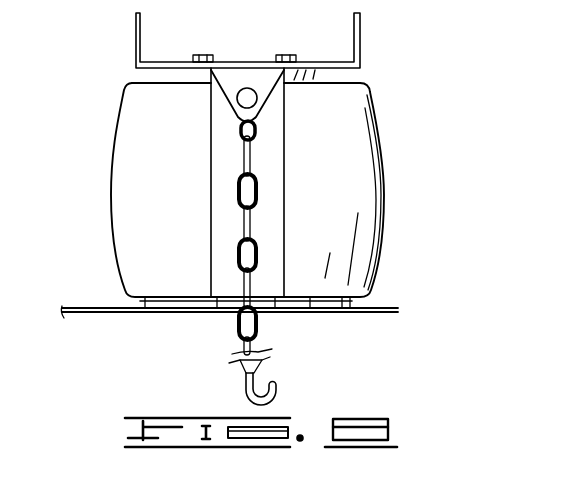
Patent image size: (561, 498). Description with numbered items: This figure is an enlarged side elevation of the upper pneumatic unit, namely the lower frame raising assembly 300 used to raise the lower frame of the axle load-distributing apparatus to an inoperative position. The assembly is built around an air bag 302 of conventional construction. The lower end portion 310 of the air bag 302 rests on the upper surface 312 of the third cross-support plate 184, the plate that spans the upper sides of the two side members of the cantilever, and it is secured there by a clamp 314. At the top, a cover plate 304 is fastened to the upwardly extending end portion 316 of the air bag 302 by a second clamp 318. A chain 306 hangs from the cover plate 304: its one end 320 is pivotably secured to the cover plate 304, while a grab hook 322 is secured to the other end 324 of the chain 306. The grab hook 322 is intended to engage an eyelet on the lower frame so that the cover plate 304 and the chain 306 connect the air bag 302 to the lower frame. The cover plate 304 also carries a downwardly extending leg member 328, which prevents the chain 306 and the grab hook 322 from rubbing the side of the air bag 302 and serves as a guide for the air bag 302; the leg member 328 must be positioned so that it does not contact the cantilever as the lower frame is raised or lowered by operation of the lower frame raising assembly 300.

The lower frame raising assembly 300 is at (96, 113).
The air bag 302 is at (367, 193).
The cover plate 304 is at (360, 45).
The chain 306 is at (260, 196).
The lower end portion 310 is at (358, 276).
The upper surface 312 is at (370, 307).
The clamp 314 is at (157, 302).
The upwardly extending end portion 316 is at (360, 100).
The clamp 318 is at (150, 79).
The one end of the chain 320 is at (242, 125).
The grab hook 322 is at (280, 392).
The other end of the chain 324 is at (236, 364).
The leg member 328 is at (220, 193).
The third cross-support plate 184 is at (348, 313).